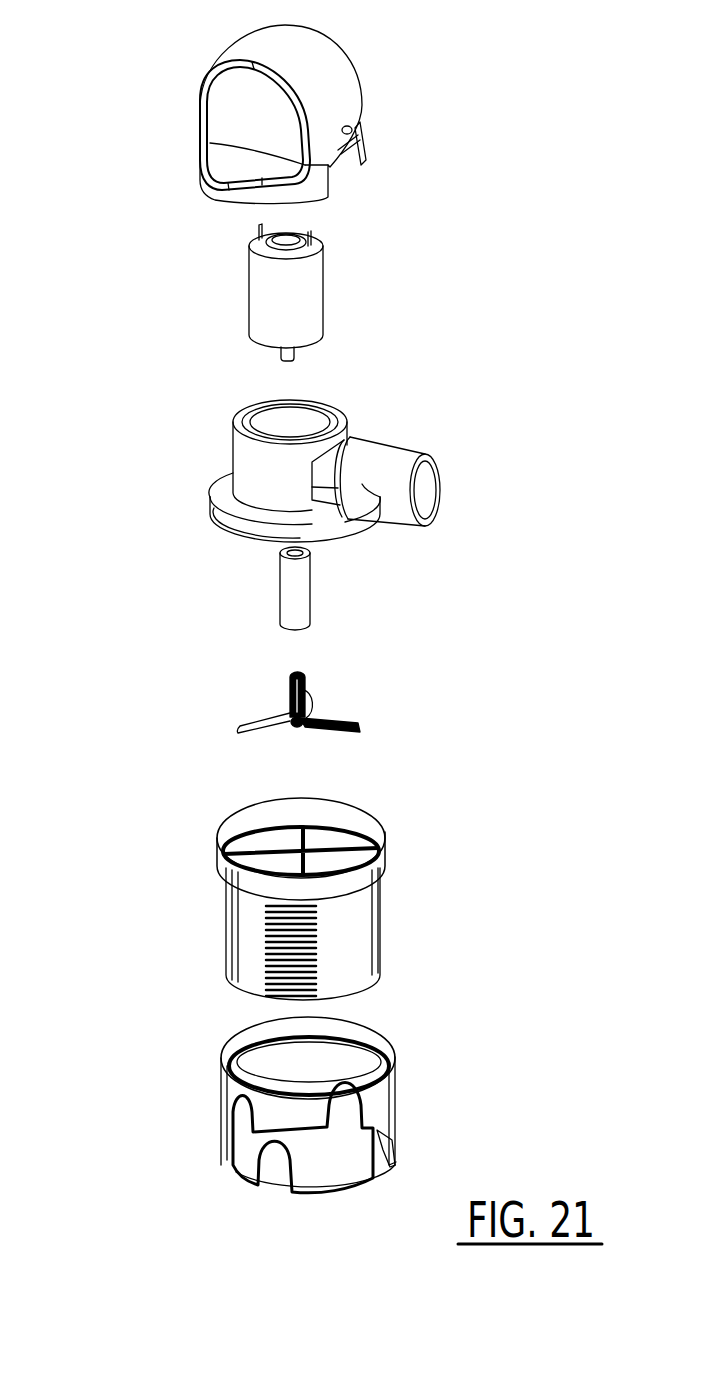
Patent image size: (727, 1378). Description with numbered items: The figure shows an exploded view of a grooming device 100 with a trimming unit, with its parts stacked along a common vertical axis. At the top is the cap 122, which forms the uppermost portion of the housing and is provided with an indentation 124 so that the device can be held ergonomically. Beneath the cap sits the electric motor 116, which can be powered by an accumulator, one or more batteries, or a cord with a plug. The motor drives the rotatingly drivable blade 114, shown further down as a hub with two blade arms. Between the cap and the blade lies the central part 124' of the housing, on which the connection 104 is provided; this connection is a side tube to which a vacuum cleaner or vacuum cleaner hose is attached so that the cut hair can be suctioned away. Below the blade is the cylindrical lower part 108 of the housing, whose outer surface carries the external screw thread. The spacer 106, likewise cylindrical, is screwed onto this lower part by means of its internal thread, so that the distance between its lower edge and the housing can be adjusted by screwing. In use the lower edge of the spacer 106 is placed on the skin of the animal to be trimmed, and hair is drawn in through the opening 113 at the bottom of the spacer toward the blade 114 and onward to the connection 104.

The grooming device 100 is at (586, 174).
The cap 122 is at (327, 68).
The indentation 124 is at (186, 125).
The electric motor 116 is at (268, 286).
The central part 124' is at (216, 471).
The connection 104 is at (396, 476).
The blade 114 is at (323, 722).
The lower part 108 is at (350, 923).
The spacer 106 is at (377, 1103).
The opening 113 is at (314, 1176).